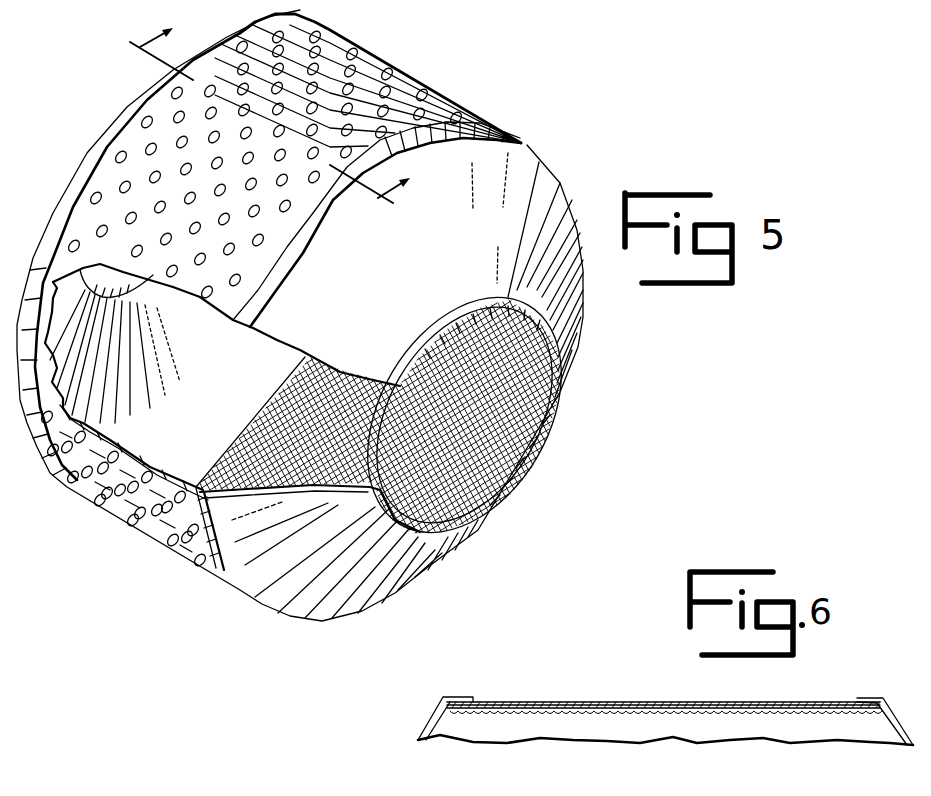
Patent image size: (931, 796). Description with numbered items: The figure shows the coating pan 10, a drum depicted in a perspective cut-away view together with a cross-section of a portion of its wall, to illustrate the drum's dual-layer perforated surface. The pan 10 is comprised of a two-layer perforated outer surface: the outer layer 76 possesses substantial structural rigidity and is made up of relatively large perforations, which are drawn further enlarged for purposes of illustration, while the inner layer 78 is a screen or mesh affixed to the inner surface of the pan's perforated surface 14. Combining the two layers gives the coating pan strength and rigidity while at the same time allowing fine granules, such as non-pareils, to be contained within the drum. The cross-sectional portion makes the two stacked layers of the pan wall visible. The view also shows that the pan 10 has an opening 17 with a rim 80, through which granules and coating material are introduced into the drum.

In FIG. 5, the pan 10 is at (520, 158).
In FIG. 6, the pan 10 is at (428, 712).
In FIG. 5, the perforated surface 14 is at (383, 82).
In FIG. 6, the perforated surface 14 is at (790, 703).
In FIG. 5, the outer layer 76 is at (110, 177).
In FIG. 6, the outer layer 76 is at (513, 705).
In FIG. 5, the inner layer 78 is at (493, 450).
In FIG. 6, the inner layer 78 is at (518, 712).
In FIG. 5, the rim 80 is at (547, 406).
In FIG. 5, the opening 17 is at (495, 493).